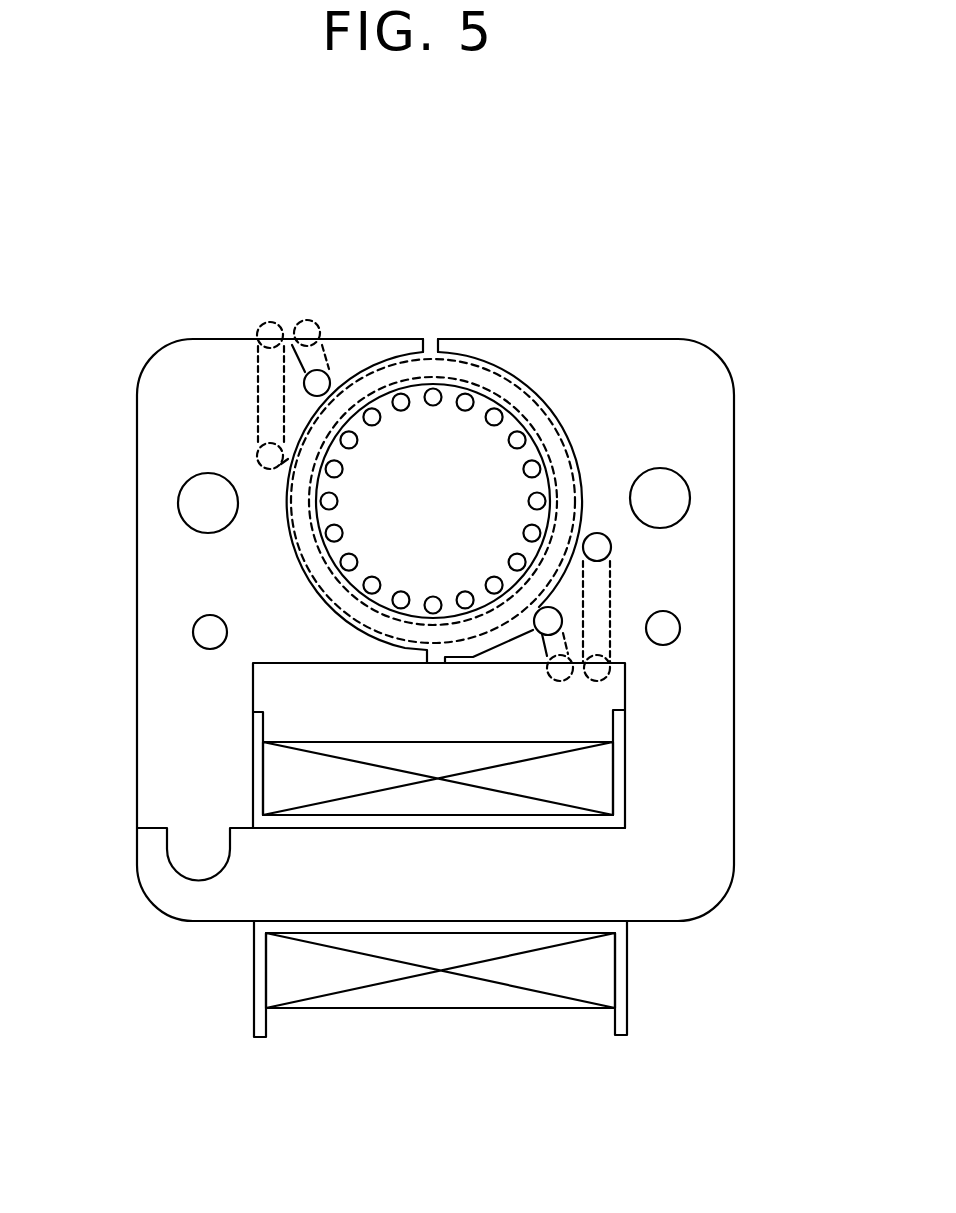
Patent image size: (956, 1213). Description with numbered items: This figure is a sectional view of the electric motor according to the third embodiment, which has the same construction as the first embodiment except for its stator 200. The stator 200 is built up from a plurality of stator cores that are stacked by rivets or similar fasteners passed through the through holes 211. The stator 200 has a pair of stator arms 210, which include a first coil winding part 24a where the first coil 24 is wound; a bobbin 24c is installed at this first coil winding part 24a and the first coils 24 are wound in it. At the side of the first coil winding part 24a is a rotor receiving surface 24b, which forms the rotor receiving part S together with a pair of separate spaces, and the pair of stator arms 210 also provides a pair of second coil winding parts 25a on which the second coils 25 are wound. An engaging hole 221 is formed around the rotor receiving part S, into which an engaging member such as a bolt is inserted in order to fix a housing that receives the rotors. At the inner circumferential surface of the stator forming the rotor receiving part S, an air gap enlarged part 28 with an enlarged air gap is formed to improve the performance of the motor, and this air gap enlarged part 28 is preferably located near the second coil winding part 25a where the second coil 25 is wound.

The stator 200 is at (747, 581).
The stator arms 210 is at (707, 656).
The through holes 211 is at (205, 633).
The engaging hole 221 is at (193, 502).
The first coil 24 is at (588, 975).
The first coil winding part 24a is at (597, 873).
The rotor receiving surface 24b is at (282, 500).
The bobbin 24c is at (625, 947).
The second coils 25 is at (262, 322).
The second coil winding parts 25a is at (307, 340).
The air gap enlarged part 28 is at (367, 343).
The rotor receiving part S is at (590, 532).